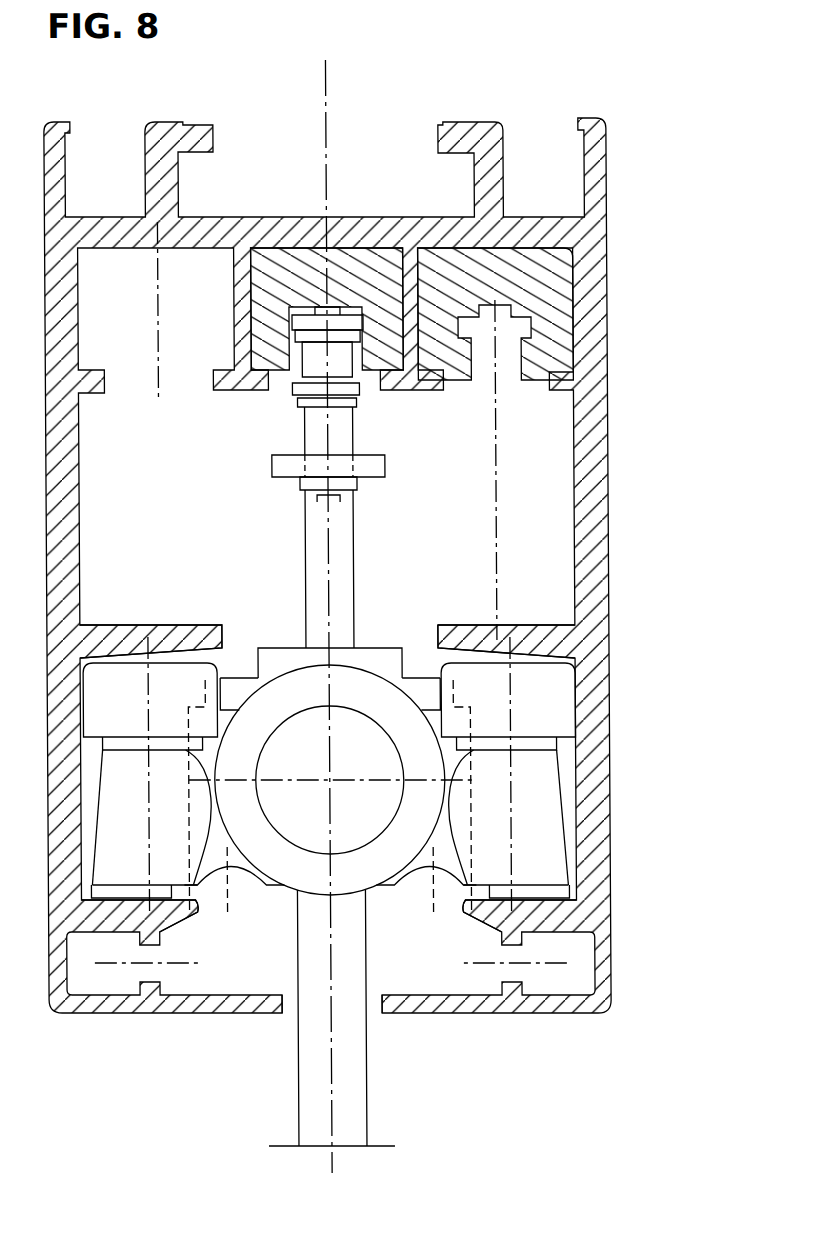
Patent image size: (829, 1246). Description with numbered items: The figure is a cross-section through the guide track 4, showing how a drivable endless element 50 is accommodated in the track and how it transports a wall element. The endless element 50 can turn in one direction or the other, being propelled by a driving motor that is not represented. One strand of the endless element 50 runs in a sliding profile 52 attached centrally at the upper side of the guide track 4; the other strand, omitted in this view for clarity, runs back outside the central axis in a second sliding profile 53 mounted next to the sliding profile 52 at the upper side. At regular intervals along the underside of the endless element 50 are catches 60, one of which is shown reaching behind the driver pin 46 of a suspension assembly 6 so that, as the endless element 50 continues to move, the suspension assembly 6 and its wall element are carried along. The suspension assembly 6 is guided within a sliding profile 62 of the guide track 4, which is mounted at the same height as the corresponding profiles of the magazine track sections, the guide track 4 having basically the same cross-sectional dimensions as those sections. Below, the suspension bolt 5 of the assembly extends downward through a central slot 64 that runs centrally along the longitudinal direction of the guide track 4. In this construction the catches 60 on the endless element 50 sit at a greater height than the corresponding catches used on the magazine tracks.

The guide track 4 is at (626, 228).
The suspension bolt 5 is at (350, 1070).
The suspension assembly 6 is at (352, 695).
The driver pin 46 is at (348, 540).
The endless element 50 is at (313, 357).
The sliding profile 52 is at (357, 272).
The sliding profile 53 is at (533, 293).
The catch 60 is at (287, 465).
The sliding profile 62 is at (173, 640).
The central slot 64 is at (292, 1008).